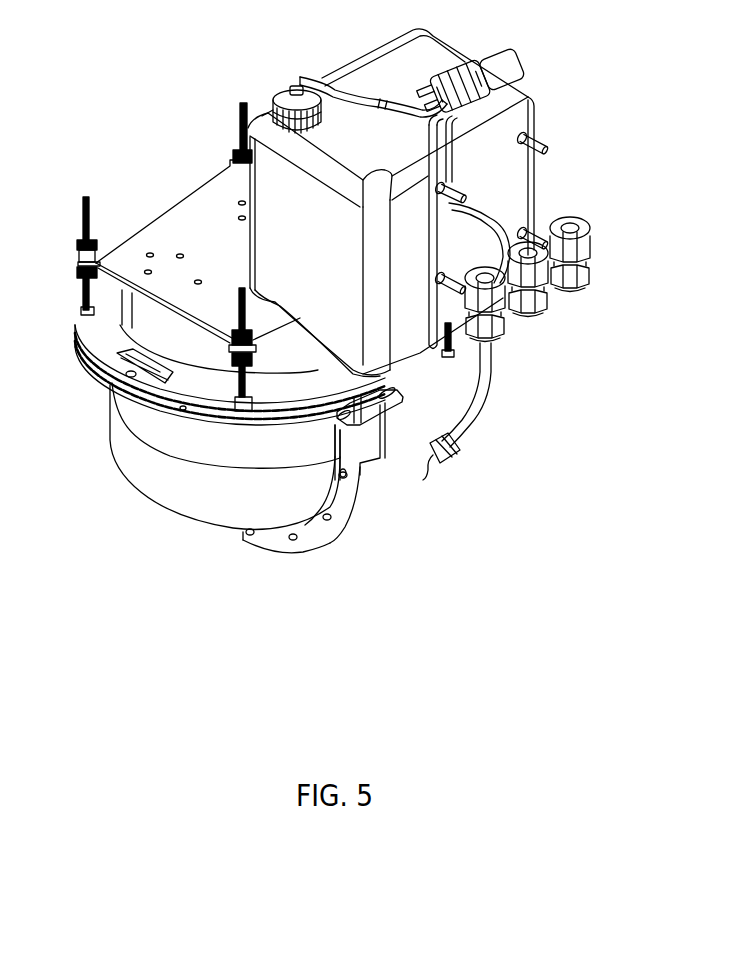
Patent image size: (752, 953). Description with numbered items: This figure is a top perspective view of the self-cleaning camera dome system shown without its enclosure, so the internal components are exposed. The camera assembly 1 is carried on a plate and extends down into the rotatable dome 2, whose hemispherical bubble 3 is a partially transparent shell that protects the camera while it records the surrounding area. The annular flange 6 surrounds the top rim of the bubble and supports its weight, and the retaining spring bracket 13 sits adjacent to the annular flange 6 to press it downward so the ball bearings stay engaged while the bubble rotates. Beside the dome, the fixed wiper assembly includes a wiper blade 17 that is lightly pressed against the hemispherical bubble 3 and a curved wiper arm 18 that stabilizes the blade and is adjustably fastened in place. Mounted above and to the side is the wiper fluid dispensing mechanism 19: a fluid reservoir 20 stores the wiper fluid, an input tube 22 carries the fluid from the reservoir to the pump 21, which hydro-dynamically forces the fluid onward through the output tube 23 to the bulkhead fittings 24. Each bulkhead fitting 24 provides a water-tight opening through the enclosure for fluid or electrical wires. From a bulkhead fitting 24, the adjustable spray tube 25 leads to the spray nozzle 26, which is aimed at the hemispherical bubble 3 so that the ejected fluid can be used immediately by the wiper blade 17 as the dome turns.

The camera assembly 1 is at (207, 360).
The rotatable dome 2 is at (182, 540).
The hemispherical bubble 3 is at (252, 505).
The annular flange 6 is at (207, 412).
The retaining spring bracket 13 is at (97, 332).
The wiper blade 17 is at (307, 517).
The wiper arm 18 is at (312, 543).
The wiper fluid dispensing mechanism 19 is at (573, 128).
The fluid reservoir 20 is at (322, 256).
The pump 21 is at (497, 62).
The input tube 22 is at (375, 97).
The output tube 23 is at (490, 230).
The bulkhead fitting 24 is at (497, 327).
The adjustable spray tube 25 is at (470, 420).
The spray nozzle 26 is at (432, 458).